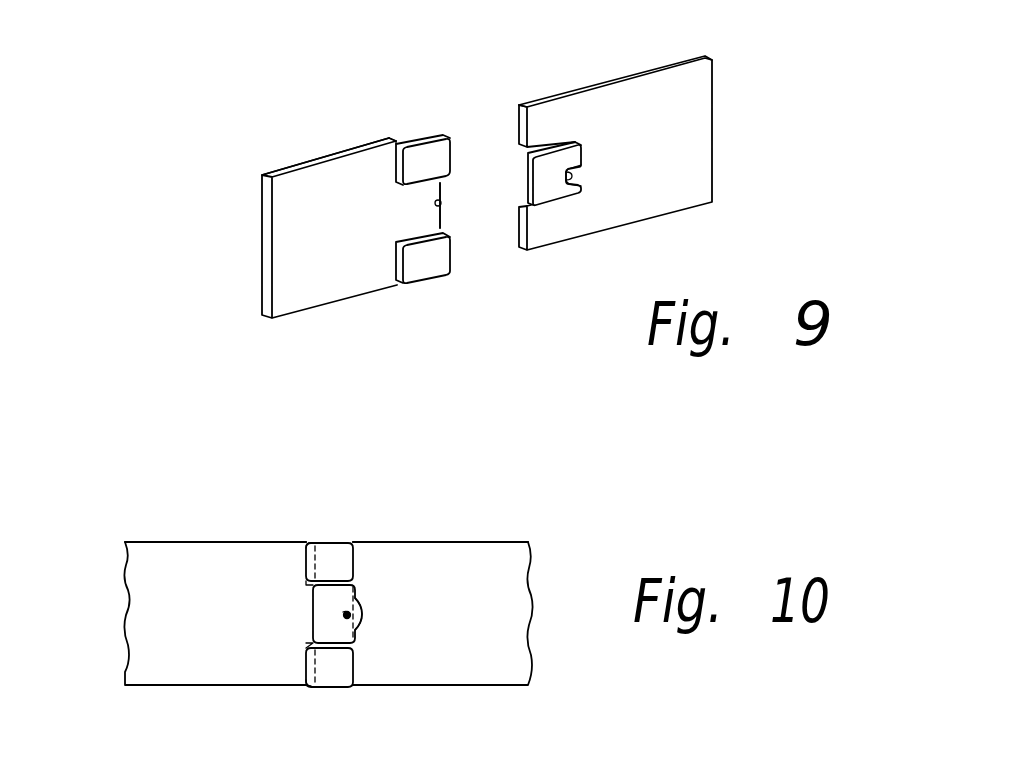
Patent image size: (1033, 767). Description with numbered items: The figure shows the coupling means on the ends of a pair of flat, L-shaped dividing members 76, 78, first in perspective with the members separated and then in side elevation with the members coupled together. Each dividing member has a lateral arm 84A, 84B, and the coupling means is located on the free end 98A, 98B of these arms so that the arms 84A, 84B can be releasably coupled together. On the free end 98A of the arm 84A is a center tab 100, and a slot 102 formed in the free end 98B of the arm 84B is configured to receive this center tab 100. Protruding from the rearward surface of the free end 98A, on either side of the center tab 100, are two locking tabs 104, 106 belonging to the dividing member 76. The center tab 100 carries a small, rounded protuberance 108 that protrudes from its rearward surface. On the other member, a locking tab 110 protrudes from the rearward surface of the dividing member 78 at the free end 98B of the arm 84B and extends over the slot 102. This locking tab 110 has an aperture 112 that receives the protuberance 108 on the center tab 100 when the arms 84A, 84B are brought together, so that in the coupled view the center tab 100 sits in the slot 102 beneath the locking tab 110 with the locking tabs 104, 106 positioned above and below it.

In FIG. 9, the dividing member 76 is at (277, 223).
In FIG. 10, the dividing member 76 is at (130, 587).
In FIG. 9, the dividing member 78 is at (665, 85).
In FIG. 10, the dividing member 78 is at (530, 592).
In FIG. 9, the lateral arm 84A is at (338, 141).
In FIG. 10, the lateral arm 84A is at (212, 512).
In FIG. 9, the lateral arm 84B is at (637, 87).
In FIG. 10, the lateral arm 84B is at (460, 557).
In FIG. 9, the free end 98A is at (397, 141).
In FIG. 10, the free end 98A is at (318, 543).
In FIG. 9, the free end 98B is at (518, 120).
In FIG. 10, the free end 98B is at (303, 670).
In FIG. 9, the center tab 100 is at (430, 190).
In FIG. 9, the slot 102 is at (528, 153).
In FIG. 10, the slot 102 is at (334, 614).
In FIG. 9, the locking tab 104 is at (420, 152).
In FIG. 10, the locking tab 104 is at (333, 553).
In FIG. 9, the locking tab 106 is at (427, 270).
In FIG. 10, the locking tab 106 is at (340, 677).
In FIG. 9, the protuberance 108 is at (441, 204).
In FIG. 10, the protuberance 108 is at (352, 618).
In FIG. 9, the locking tab 110 is at (573, 153).
In FIG. 10, the locking tab 110 is at (327, 613).
In FIG. 9, the aperture 112 is at (569, 175).
In FIG. 10, the aperture 112 is at (353, 613).